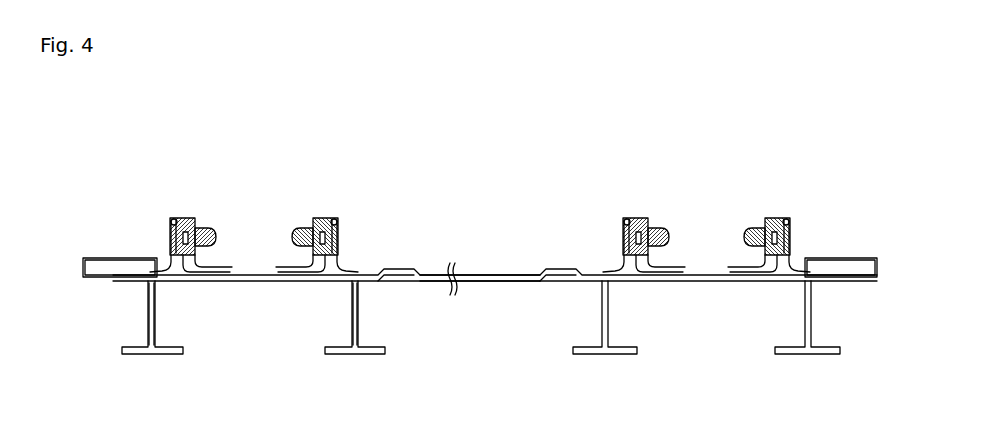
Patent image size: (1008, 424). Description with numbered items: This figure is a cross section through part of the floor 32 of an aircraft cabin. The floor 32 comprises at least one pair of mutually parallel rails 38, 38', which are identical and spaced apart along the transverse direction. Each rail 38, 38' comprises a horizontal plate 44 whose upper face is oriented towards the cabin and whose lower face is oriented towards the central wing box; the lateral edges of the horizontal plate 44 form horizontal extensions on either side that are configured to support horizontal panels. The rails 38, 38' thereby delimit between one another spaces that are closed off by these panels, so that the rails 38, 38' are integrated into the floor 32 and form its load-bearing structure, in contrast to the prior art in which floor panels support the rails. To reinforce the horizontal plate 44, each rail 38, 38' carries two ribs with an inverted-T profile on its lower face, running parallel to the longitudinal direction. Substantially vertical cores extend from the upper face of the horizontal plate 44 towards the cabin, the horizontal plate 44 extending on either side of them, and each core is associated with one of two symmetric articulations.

The floor 32 is at (226, 181).
The rail 38 is at (265, 185).
The rail 38' is at (712, 184).
The horizontal plate 44 is at (256, 288).